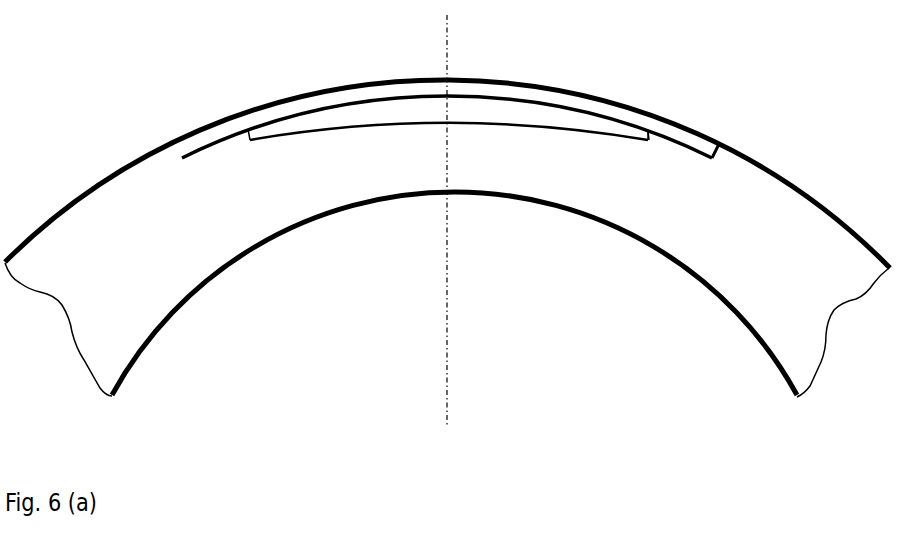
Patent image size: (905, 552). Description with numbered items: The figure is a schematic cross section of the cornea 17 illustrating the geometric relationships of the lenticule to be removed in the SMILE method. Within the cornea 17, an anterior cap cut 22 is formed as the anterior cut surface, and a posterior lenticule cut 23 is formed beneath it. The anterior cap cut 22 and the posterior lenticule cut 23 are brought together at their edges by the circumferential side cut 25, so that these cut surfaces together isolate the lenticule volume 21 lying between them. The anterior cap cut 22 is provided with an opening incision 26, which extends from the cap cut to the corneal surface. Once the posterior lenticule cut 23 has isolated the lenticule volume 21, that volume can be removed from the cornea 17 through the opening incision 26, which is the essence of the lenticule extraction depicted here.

The cornea 17 is at (165, 234).
The lenticule volume 21 is at (317, 120).
The anterior cap cut 22 is at (459, 97).
The posterior lenticule cut 23 is at (457, 123).
The circumferential side cut 25 is at (652, 142).
The opening incision 26 is at (727, 150).